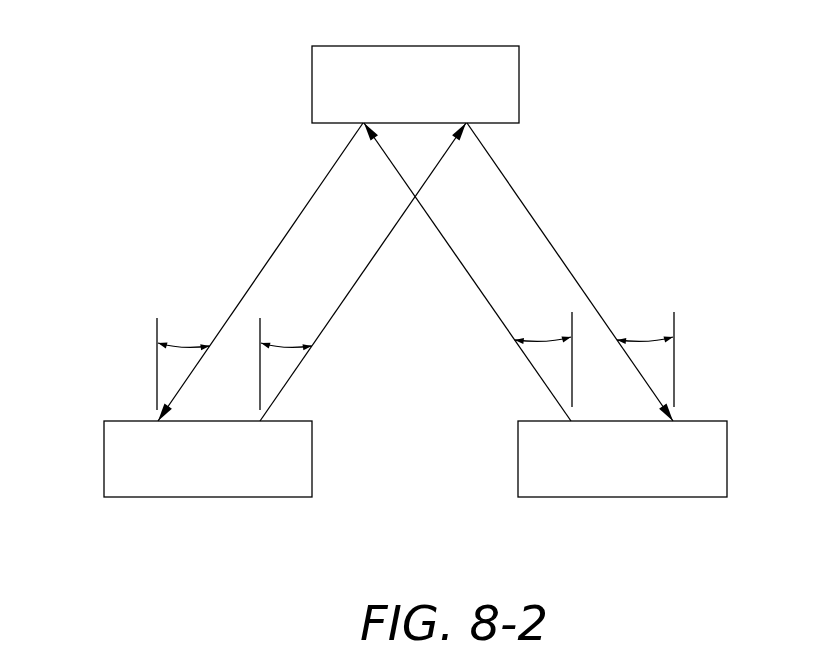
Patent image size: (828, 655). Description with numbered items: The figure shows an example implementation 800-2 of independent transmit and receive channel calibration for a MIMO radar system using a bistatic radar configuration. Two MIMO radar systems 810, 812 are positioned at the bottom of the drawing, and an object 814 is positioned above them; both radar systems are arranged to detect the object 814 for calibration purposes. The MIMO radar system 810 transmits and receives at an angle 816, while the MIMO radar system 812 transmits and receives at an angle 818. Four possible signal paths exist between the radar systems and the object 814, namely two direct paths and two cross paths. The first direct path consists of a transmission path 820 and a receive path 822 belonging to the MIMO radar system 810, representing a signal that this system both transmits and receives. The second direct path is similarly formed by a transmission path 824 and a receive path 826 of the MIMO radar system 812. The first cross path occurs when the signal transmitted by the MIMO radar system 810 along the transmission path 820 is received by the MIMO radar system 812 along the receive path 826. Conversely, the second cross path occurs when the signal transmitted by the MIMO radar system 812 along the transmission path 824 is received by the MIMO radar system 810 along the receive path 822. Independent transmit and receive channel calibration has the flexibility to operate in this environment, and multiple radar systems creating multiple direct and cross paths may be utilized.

The example implementation 800-2 is at (120, 36).
The MIMO radar system 810 is at (208, 459).
The MIMO radar system 812 is at (622, 459).
The object 814 is at (415, 84).
The angle 816 is at (234, 357).
The angle 818 is at (594, 354).
The transmission path 820 is at (340, 307).
The receive path 822 is at (268, 257).
The transmission path 824 is at (517, 343).
The receive path 826 is at (572, 272).